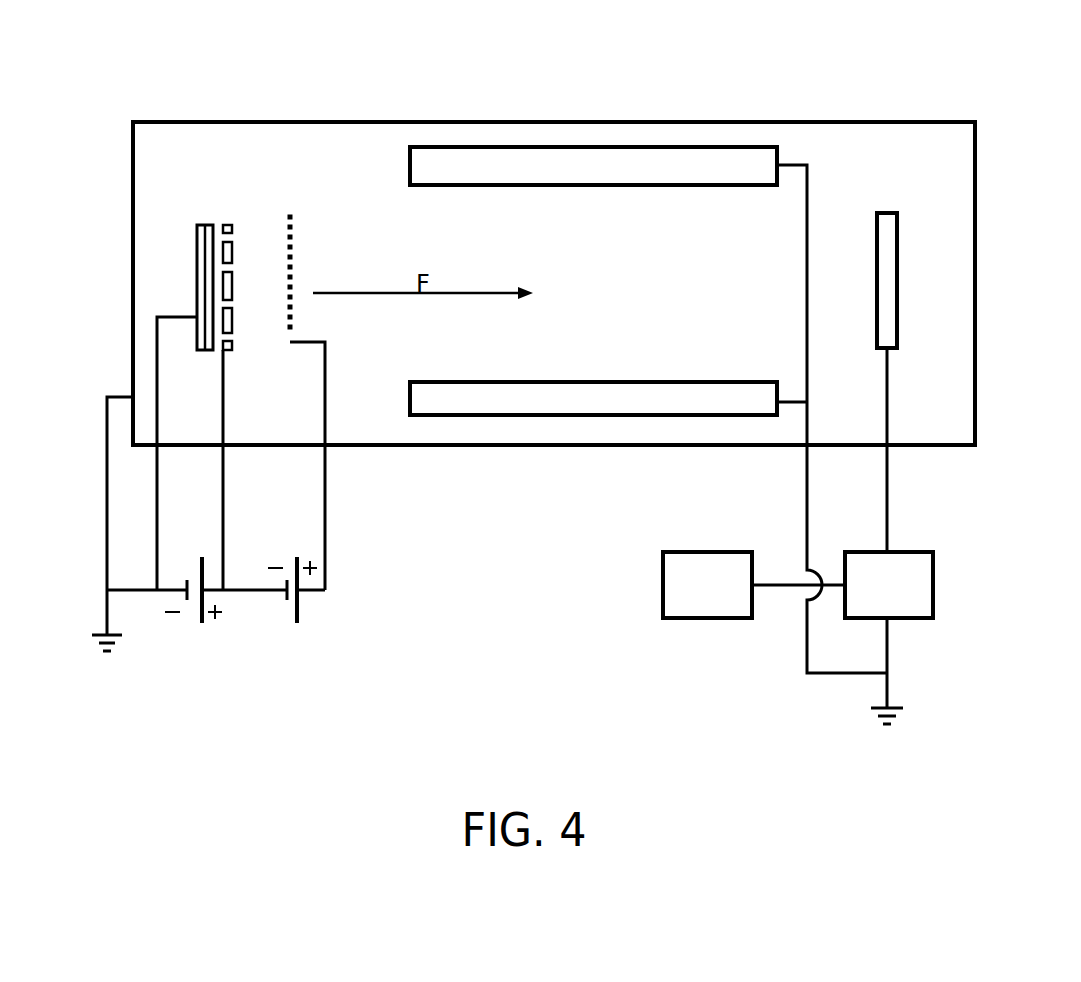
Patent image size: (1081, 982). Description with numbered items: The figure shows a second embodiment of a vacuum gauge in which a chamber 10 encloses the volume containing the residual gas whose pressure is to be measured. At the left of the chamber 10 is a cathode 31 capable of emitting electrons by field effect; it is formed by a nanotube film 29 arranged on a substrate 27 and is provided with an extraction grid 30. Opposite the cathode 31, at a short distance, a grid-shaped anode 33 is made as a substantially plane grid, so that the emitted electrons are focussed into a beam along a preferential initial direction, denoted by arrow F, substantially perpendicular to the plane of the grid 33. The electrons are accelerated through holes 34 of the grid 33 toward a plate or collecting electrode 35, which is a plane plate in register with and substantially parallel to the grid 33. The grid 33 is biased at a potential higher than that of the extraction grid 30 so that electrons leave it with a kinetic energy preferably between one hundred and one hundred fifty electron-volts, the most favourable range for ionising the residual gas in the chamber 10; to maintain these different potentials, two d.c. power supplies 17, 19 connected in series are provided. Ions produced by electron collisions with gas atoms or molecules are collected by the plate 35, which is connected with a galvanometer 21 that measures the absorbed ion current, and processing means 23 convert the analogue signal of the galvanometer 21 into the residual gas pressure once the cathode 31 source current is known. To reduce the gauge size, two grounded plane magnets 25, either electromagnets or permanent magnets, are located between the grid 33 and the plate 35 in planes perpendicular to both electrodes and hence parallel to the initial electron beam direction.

The chamber 10 is at (760, 127).
The d.c. power supply 17 is at (208, 645).
The d.c. power supply 19 is at (320, 617).
The galvanometer 21 is at (876, 600).
The means for processing the analogue signal 23 is at (691, 600).
The magnets 25 is at (588, 147).
The substrate 27 is at (197, 270).
The nanotube film 29 is at (212, 225).
The extraction grid 30 is at (230, 263).
The cathode 31 is at (150, 190).
The grid-shaped anode 33 is at (312, 262).
The holes 34 is at (290, 331).
The plate or collecting electrode 35 is at (897, 267).